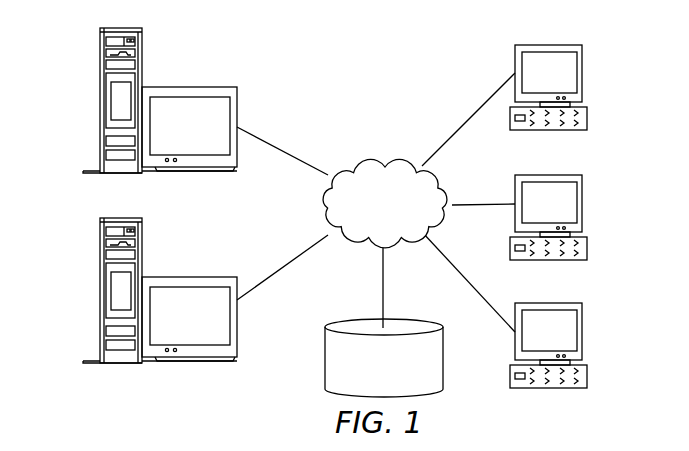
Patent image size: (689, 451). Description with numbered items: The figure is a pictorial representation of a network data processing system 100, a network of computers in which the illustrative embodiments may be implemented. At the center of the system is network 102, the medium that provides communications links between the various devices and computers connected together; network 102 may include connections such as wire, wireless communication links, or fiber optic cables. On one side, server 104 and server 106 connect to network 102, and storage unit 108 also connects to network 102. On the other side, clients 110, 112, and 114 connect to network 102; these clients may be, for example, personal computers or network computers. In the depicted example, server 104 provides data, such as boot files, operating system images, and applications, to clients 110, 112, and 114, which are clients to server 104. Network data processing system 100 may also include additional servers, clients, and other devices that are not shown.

The network data processing system 100 is at (428, 68).
The network 102 is at (358, 158).
The server 104 is at (100, 100).
The server 106 is at (138, 304).
The storage unit 108 is at (325, 365).
The client 110 is at (582, 73).
The client 112 is at (574, 228).
The client 114 is at (574, 356).